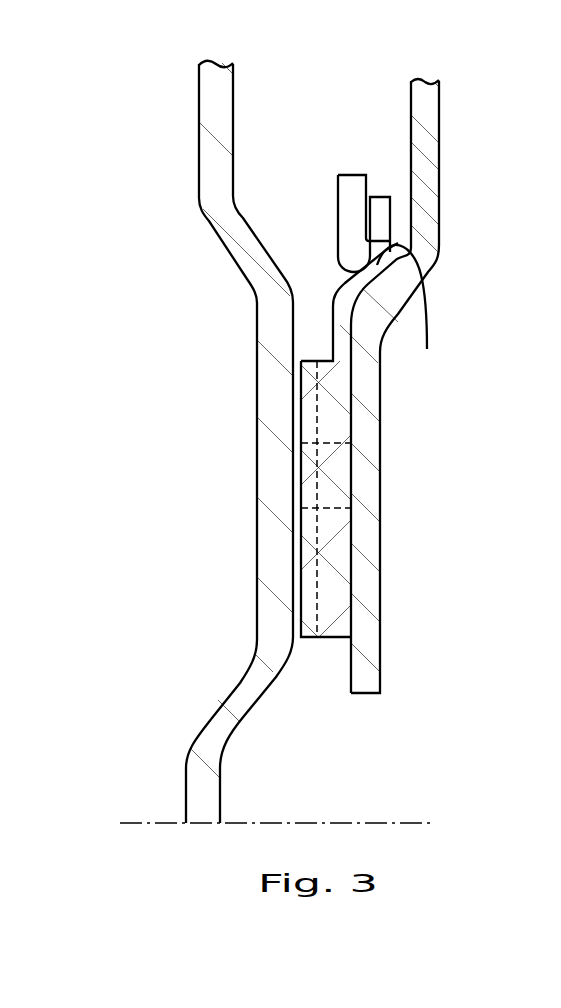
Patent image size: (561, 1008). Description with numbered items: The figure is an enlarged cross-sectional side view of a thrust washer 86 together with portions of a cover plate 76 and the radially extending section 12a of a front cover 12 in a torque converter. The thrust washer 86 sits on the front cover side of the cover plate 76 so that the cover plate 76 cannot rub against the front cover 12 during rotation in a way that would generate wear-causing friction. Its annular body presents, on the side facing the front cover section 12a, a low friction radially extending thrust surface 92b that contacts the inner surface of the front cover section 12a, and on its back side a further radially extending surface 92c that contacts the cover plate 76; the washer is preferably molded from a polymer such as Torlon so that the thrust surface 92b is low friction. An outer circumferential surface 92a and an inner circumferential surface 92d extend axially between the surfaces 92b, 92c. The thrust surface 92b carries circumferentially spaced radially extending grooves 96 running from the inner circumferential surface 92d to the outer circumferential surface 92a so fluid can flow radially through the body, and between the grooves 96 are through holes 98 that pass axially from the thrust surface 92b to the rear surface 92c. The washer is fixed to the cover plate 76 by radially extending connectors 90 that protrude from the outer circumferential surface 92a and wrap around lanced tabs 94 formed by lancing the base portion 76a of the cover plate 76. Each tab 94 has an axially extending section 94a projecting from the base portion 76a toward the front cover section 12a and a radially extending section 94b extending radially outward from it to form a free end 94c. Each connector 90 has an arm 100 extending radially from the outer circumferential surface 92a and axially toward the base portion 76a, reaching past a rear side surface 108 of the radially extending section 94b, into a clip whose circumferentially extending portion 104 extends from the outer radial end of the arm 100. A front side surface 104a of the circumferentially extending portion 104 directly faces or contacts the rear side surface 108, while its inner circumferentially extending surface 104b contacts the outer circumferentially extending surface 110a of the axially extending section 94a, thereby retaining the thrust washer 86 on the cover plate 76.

The front cover 12 is at (199, 165).
The radially extending section 12a is at (273, 318).
The second cover plate 76 is at (444, 144).
The base portion 76a is at (430, 172).
The thrust washer 86 is at (310, 652).
The radially extending connectors 90 is at (381, 168).
The outer circumferential surface 92a is at (302, 360).
The thrust surface 92b is at (300, 483).
The radially extending surface 92c is at (352, 497).
The inner circumferential surface 92d is at (333, 640).
The tabs 94 is at (336, 165).
The axially extending section 94a is at (395, 248).
The radially extending section 94b is at (350, 212).
The free end 94c is at (341, 170).
The radially extending grooves 96 is at (318, 399).
The through holes 98 is at (337, 455).
The arm 100 is at (357, 275).
The circumferentially extending portion 104 is at (350, 300).
The front side surface 104a is at (352, 200).
The inner circumferentially extending surface 104b is at (392, 232).
The rear side surface 108 is at (360, 232).
The outer circumferentially extending surface 110a is at (427, 308).